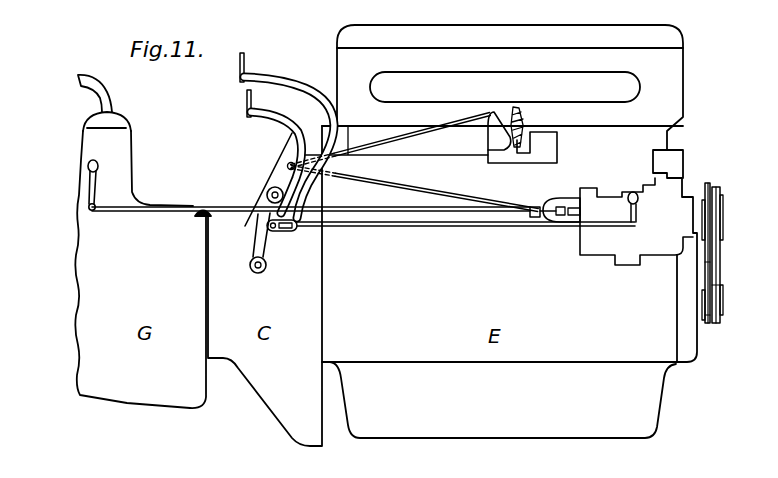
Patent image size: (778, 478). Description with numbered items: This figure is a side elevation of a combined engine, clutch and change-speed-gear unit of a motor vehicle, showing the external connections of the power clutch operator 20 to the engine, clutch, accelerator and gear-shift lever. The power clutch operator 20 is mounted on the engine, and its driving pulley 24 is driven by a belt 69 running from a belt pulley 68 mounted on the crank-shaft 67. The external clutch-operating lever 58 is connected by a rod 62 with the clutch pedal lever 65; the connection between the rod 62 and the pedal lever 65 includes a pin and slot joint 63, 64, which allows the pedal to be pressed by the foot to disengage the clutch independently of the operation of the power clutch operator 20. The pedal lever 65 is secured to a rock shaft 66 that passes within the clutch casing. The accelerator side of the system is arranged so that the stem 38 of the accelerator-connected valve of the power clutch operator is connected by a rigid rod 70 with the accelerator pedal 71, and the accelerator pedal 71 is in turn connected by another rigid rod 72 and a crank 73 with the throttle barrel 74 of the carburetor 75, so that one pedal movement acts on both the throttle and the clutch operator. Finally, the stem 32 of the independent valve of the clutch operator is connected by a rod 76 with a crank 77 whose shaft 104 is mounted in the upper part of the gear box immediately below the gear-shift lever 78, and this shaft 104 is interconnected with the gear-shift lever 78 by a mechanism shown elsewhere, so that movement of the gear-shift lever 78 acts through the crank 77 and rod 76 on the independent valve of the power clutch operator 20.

The gear-shift lever 78 is at (106, 100).
The shaft 104 is at (99, 162).
The crank 77 is at (98, 190).
The rod 76 is at (343, 207).
The clutch pedal lever 65 is at (270, 80).
The rock shaft 66 is at (255, 268).
The accelerator pedal 71 is at (273, 120).
The rigid rod 72 is at (427, 127).
The rigid rod 70 is at (397, 180).
The crank 73 is at (500, 127).
The throttle barrel 74 is at (527, 130).
The carburetor 75 is at (515, 163).
The rod 62 is at (494, 228).
The pin and slot joint 63 is at (290, 232).
The pin and slot joint 64 is at (273, 233).
The stem 32 is at (538, 218).
The stem 38 is at (565, 200).
The external clutch-operating lever 58 is at (640, 209).
The power clutch operator 20 is at (602, 243).
The driving pulley 24 is at (713, 183).
The belt 69 is at (708, 267).
The crank-shaft 67 is at (717, 288).
The belt pulley 68 is at (707, 313).